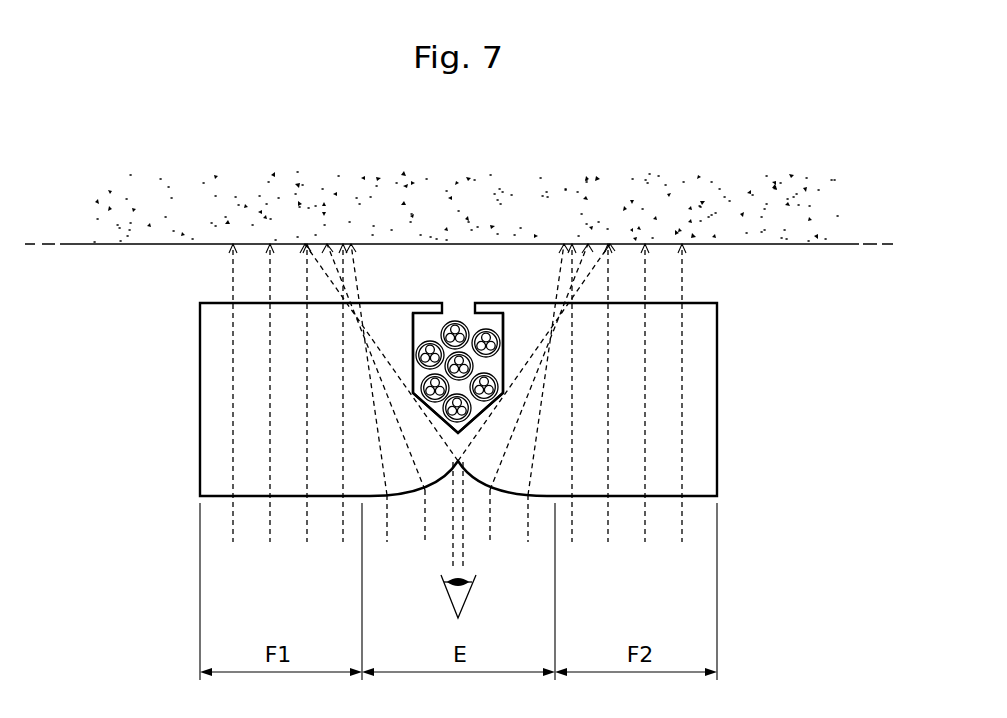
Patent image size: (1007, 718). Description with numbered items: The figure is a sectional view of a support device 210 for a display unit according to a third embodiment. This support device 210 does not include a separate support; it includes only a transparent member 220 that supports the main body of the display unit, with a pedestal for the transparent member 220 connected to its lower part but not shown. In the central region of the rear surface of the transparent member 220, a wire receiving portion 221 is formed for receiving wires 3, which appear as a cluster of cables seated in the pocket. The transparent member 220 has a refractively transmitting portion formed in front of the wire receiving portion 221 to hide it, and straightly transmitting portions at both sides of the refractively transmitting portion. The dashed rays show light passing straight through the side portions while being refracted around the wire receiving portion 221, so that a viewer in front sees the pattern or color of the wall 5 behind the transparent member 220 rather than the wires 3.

The wall 5 is at (198, 244).
The wires 3 is at (455, 321).
The wire receiving portion 221 is at (496, 368).
The transparent member 220 is at (210, 373).
The support device 210 is at (186, 428).